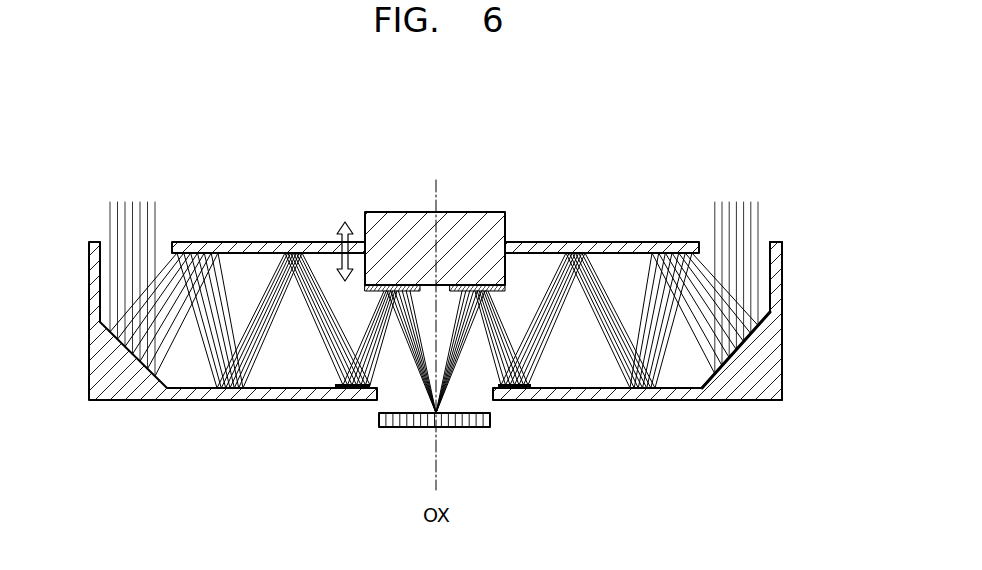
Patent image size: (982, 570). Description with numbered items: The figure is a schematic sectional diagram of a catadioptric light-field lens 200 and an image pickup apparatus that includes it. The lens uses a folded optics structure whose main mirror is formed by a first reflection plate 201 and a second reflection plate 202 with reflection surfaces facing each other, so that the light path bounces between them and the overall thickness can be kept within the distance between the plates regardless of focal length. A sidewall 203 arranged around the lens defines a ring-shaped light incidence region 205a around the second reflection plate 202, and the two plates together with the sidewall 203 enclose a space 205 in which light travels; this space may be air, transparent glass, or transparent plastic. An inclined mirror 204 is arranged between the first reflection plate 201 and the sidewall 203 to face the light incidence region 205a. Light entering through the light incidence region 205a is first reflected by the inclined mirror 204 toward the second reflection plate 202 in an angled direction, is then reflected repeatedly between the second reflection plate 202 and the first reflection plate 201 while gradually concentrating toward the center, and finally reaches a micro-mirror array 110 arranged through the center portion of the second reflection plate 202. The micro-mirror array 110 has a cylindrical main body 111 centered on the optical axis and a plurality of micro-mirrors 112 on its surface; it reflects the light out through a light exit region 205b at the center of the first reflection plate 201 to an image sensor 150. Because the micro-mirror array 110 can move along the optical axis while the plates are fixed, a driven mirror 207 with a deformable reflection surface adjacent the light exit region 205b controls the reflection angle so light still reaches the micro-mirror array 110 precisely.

The catadioptric light-field lens 200 is at (462, 282).
The first reflection plate 201 is at (582, 398).
The second reflection plate 202 is at (625, 242).
The sidewall 203 is at (777, 272).
The inclined mirror 204 is at (730, 368).
The space 205 is at (434, 332).
The light incidence region 205a is at (706, 240).
The light exit region 205b is at (468, 390).
The driven mirror 207 is at (340, 386).
The micro-mirror array 110 is at (453, 225).
The main body 111 is at (397, 220).
The micro-mirrors 112 is at (500, 292).
The image sensor 150 is at (402, 429).